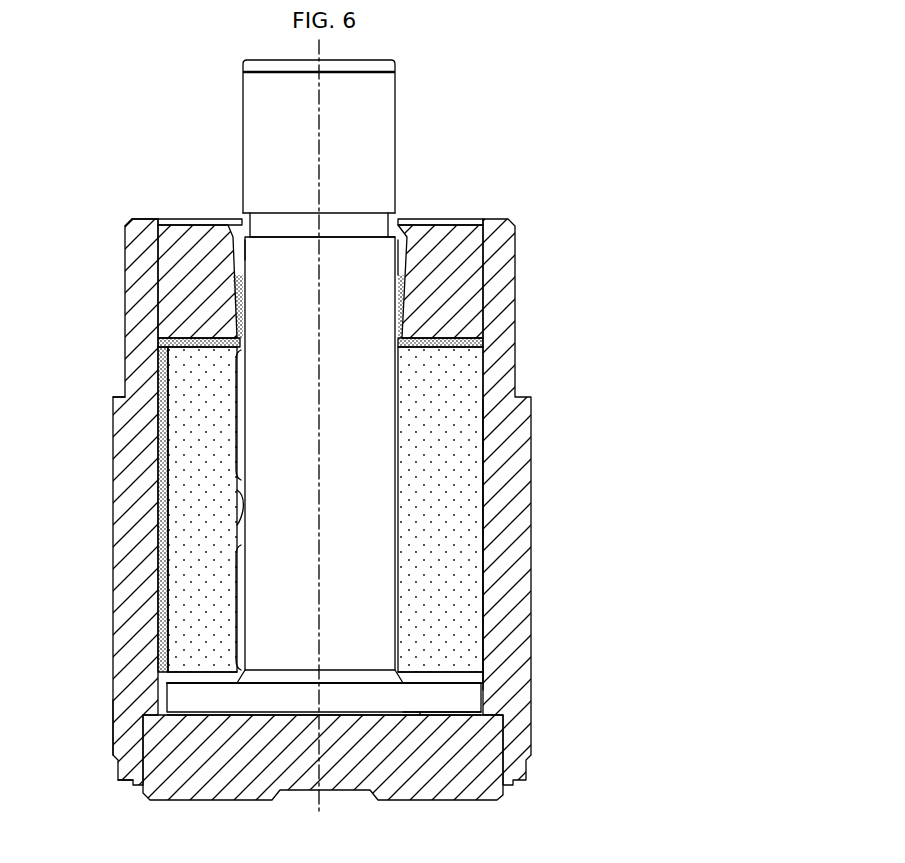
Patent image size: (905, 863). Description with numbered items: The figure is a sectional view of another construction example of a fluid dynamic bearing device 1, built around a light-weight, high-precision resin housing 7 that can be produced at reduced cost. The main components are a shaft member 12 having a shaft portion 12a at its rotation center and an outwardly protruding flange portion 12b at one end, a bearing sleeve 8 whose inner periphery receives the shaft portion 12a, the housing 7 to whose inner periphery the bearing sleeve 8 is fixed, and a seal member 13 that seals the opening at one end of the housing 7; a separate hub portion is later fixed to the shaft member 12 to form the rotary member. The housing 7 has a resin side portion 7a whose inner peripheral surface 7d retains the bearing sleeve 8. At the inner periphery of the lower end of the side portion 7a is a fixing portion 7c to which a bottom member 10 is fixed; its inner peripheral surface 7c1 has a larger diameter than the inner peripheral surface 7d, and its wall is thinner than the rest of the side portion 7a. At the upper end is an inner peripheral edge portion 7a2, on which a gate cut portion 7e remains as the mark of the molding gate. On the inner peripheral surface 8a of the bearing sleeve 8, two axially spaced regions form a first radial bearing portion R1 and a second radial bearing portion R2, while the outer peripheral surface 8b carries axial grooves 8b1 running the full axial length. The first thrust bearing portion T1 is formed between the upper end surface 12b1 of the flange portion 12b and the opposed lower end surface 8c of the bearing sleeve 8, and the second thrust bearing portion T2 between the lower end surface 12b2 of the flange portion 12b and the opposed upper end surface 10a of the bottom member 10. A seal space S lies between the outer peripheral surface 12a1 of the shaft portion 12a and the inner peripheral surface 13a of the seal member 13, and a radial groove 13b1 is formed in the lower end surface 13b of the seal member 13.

The fluid dynamic bearing device 1 is at (583, 135).
The housing 7 is at (505, 287).
The side portion 7a is at (132, 410).
The inner peripheral edge portion 7a2 is at (158, 219).
The gate cut portion 7e is at (92, 236).
The fixing portion 7c is at (130, 735).
The inner peripheral surface of the fixing portion 7c1 is at (150, 778).
The inner peripheral surface 7d is at (475, 552).
The bearing sleeve 8 is at (183, 482).
The inner peripheral surface of the bearing sleeve 8a is at (245, 503).
The outer peripheral surface of the bearing sleeve 8b is at (158, 635).
The axial groove 8b1 is at (167, 553).
The lower end surface of the bearing sleeve 8c is at (462, 343).
The bottom member 10 is at (192, 763).
The upper end surface of the bottom member 10a is at (220, 712).
The shaft member 12 is at (403, 107).
The shaft portion 12a is at (360, 255).
The outer peripheral surface of the shaft portion 12a1 is at (405, 238).
The flange portion 12b is at (388, 702).
The upper end surface of the flange portion 12b1 is at (437, 677).
The lower end surface of the flange portion 12b2 is at (440, 718).
The seal member 13 is at (186, 225).
The inner peripheral surface of the seal member 13a is at (233, 226).
The lower end surface of the seal member 13b is at (442, 343).
The radial groove 13b1 is at (182, 327).
The first radial bearing portion R1 is at (228, 411).
The second radial bearing portion R2 is at (230, 604).
The seal space S is at (400, 240).
The first thrust bearing portion T1 is at (422, 675).
The second thrust bearing portion T2 is at (420, 717).